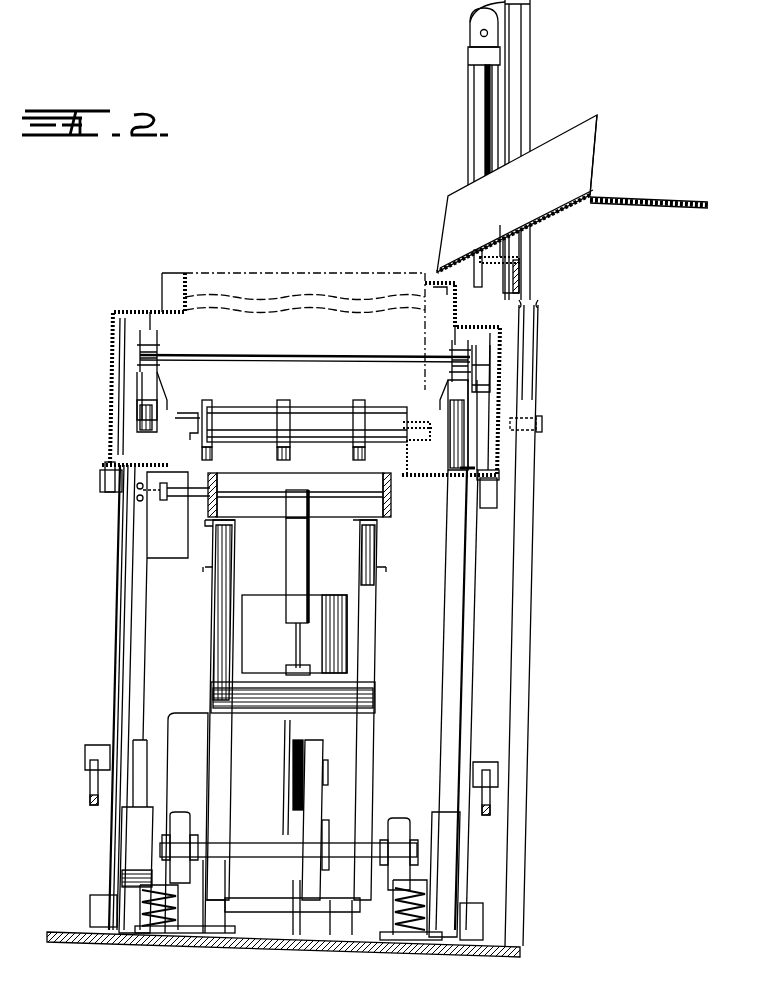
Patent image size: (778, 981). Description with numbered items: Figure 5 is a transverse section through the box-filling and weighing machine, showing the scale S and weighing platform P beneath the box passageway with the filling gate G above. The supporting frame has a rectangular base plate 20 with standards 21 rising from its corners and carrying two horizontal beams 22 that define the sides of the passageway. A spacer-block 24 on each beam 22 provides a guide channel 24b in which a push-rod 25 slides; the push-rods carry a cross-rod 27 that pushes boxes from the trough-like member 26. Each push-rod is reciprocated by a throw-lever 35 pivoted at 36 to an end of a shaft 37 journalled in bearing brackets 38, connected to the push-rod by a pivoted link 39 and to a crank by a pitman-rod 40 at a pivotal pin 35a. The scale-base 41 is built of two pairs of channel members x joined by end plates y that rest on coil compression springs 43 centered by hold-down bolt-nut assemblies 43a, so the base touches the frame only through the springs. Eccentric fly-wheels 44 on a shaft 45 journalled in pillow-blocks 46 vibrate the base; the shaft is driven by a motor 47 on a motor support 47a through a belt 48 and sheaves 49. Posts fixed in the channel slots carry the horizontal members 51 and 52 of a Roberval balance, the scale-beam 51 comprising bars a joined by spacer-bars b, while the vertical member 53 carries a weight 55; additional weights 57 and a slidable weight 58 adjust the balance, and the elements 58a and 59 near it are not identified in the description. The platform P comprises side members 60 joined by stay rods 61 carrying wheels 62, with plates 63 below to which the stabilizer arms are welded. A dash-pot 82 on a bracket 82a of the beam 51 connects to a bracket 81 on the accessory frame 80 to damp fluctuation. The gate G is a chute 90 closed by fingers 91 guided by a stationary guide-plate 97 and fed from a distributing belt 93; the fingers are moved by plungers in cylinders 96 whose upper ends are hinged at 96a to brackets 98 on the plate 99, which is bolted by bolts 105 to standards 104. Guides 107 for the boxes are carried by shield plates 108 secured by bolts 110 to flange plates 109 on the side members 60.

The base plate 20 is at (75, 932).
The standards 21 is at (148, 650).
The horizontal beams 22 is at (140, 405).
The spacer-block 24 is at (152, 375).
The guide channel 24b is at (160, 347).
The push-rods 25 is at (135, 327).
The trough-like member 26 is at (225, 408).
The cross-rod 27 is at (283, 356).
The throw-lever 35 is at (114, 668).
The pivotal pins 35a is at (100, 745).
The pivot 36 is at (105, 895).
The shaft 37 is at (270, 935).
The bearing brackets 38 is at (132, 934).
The pivoted link 39 is at (116, 440).
The pitman-rod 40 is at (90, 785).
The scale-base 41 is at (226, 900).
The coil compression springs 43 is at (175, 932).
The hold-down bolt-nut assembly 43a is at (158, 932).
The eccentric fly-wheels 44 is at (122, 843).
The shaft 45 is at (245, 845).
The pillow-blocks 46 is at (180, 816).
The motor 47 is at (178, 722).
The motor support 47a is at (298, 936).
The belt 48 is at (318, 823).
The sheaves 49 is at (324, 770).
The scale-beam 51 is at (386, 478).
The lower horizontal member 52 is at (313, 745).
The vertical member 53 is at (284, 733).
The weight 55 is at (337, 595).
The additional weights 57 is at (262, 478).
The slidable weight 58 is at (176, 606).
The rollers 58a is at (138, 497).
The pin 59 is at (163, 500).
The side members 60 is at (190, 413).
The stay rods 61 is at (265, 428).
The wheels 62 is at (302, 424).
The horizontal plate 63 is at (213, 470).
The accessory frame 80 is at (215, 590).
The bracket 81 is at (376, 700).
The dash-pot 82 is at (286, 583).
The bracket 82a is at (306, 490).
The chute 90 is at (590, 157).
The fingers 91 is at (482, 275).
The distributing belt 93 is at (612, 199).
The cylinder 96 is at (472, 98).
The hinge 96a is at (480, 33).
The stationary guide-plate 97 is at (495, 257).
The brackets 98 is at (520, 85).
The gate supporting plate 99 is at (518, 312).
The standards 104 is at (530, 620).
The bolts 105 is at (542, 424).
The guides 107 is at (180, 296).
The angular shield plates 108 is at (475, 460).
The flange plate 109 is at (497, 495).
The bolts 110 is at (100, 470).
The gate mechanism G is at (540, 153).
The weighing platform P is at (360, 408).
The scale S is at (396, 522).
The horizontal bars a is at (391, 502).
The spacer-bars b is at (270, 512).
The channel members x is at (226, 934).
The plates y is at (450, 874).